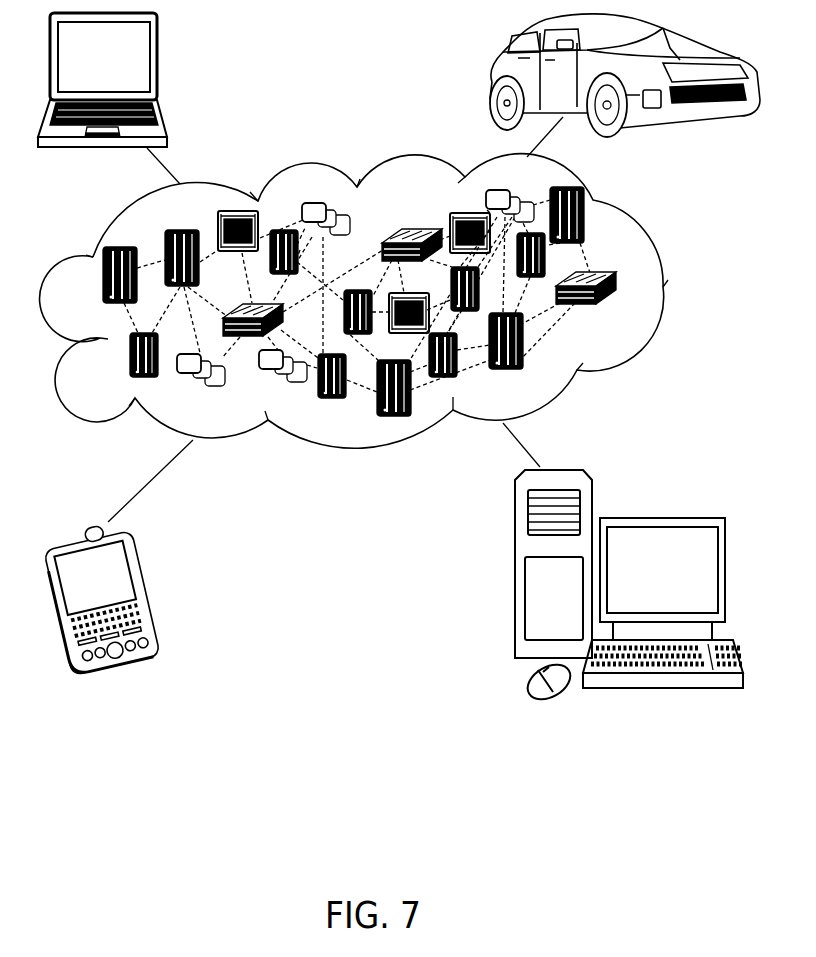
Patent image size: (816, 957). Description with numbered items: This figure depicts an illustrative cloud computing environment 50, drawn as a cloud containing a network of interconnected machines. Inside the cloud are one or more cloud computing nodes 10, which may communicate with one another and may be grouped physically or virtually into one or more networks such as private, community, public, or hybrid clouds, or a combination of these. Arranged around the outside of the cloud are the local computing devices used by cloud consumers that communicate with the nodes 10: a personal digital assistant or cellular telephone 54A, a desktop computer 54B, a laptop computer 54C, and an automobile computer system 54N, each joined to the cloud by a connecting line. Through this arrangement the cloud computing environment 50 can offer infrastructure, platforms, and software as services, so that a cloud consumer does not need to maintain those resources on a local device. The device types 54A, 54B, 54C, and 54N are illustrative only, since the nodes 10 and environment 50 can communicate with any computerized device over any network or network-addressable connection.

The cloud computing nodes 10 is at (622, 313).
The cloud computing environment 50 is at (663, 287).
The personal digital assistant (PDA) or cellular telephone 54A is at (147, 595).
The desktop computer 54B is at (660, 518).
The laptop computer 54C is at (157, 62).
The automobile computer system 54N is at (492, 78).